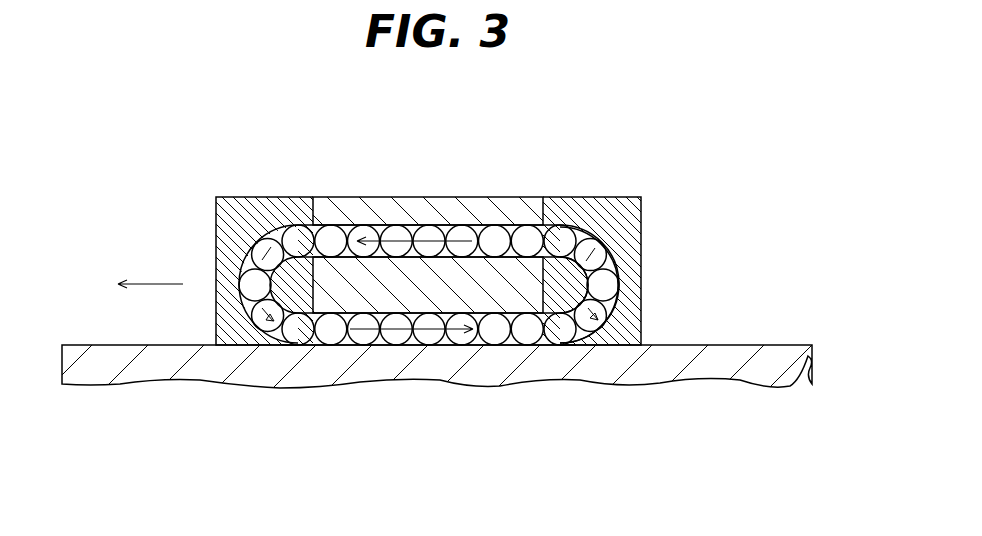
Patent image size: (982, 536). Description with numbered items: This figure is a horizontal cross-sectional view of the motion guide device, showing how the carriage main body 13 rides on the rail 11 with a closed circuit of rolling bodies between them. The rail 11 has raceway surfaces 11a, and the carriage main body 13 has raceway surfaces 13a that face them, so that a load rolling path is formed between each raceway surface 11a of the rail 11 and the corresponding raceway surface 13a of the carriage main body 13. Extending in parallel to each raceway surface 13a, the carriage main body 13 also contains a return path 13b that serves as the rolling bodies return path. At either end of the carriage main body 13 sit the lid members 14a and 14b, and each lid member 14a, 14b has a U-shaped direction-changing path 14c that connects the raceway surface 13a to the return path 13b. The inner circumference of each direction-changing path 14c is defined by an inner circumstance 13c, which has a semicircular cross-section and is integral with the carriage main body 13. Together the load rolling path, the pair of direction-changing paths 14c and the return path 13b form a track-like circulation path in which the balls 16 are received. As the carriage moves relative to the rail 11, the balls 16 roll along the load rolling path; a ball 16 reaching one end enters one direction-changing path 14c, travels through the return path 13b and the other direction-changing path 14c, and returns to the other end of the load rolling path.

The rail 11 is at (385, 362).
The raceway surface of the rail 11a is at (466, 330).
The carriage main body 13 is at (397, 203).
The raceway surface of the carriage main body 13a is at (464, 325).
The return path 13b is at (481, 246).
The inner circumstance 13c is at (627, 281).
The lid member 14a is at (250, 215).
The lid member 14b is at (602, 200).
The direction-changing path 14c is at (618, 238).
The balls 16 is at (333, 336).